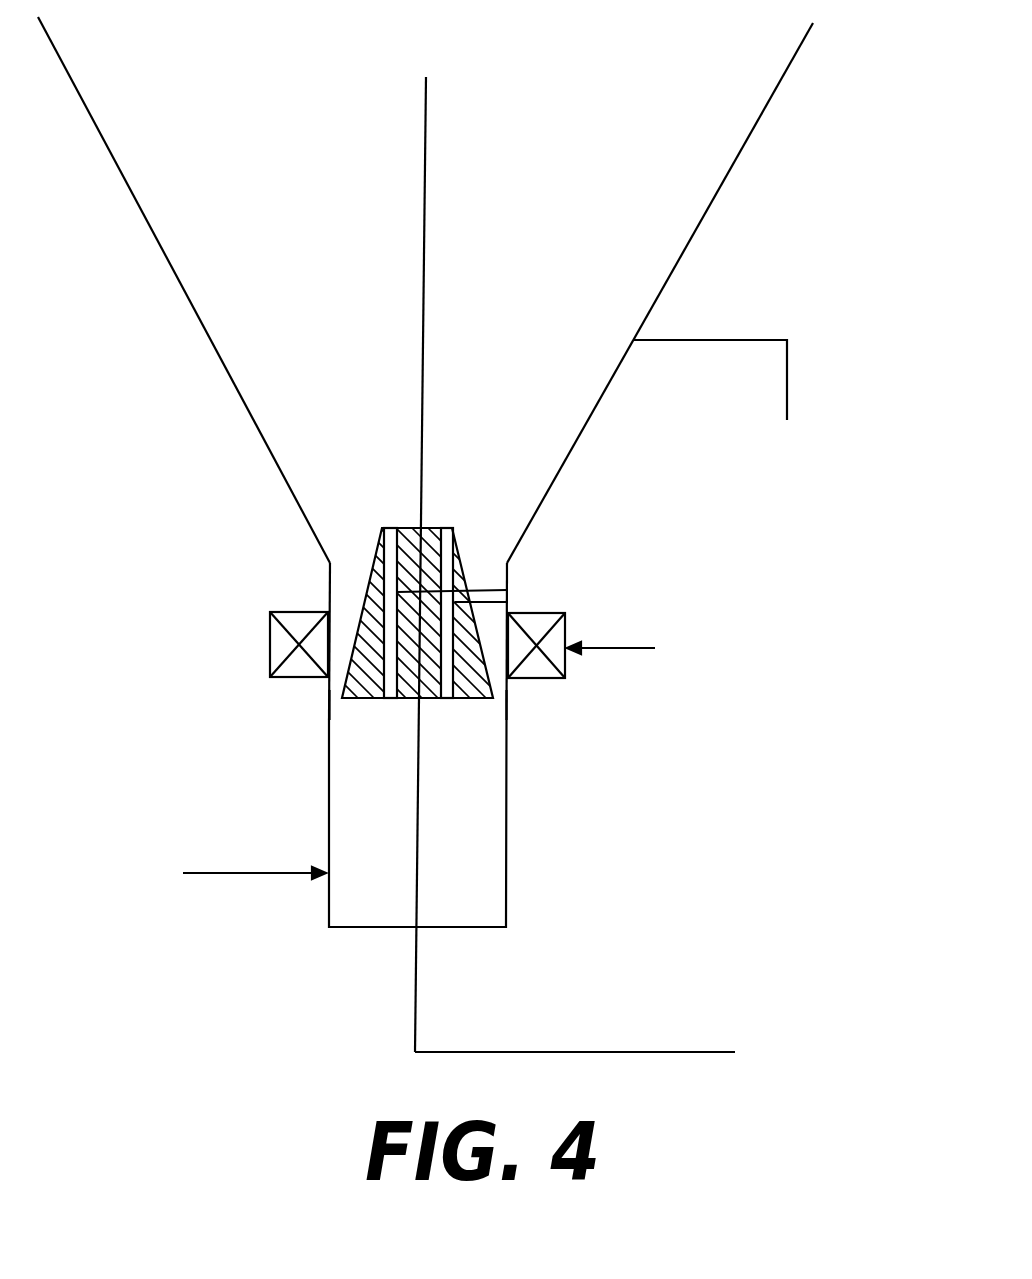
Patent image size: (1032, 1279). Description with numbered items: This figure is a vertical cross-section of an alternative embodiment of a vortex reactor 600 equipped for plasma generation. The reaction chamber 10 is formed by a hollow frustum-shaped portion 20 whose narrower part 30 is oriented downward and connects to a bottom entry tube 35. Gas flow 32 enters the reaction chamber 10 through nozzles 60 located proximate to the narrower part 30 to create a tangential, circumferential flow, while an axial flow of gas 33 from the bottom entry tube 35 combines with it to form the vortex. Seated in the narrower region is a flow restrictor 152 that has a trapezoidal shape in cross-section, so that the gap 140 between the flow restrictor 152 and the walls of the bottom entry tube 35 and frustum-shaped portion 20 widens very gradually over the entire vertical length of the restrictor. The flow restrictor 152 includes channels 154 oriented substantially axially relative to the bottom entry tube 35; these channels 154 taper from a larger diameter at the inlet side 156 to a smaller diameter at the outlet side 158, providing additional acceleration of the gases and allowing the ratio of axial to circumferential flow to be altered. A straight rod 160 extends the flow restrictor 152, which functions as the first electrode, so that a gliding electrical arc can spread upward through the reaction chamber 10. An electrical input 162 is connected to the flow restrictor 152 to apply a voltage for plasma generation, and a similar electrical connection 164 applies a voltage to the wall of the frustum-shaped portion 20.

The reaction chamber 10 is at (425, 472).
The frustum-shaped portion 20 is at (220, 363).
The narrower part 30 is at (330, 565).
The gas flow 32 is at (637, 651).
The axial flow of gas 33 is at (232, 878).
The bottom entry tube 35 is at (507, 880).
The nozzles 60 is at (270, 650).
The gap 140 is at (328, 706).
The flow restrictor 152 is at (462, 560).
The channels 154 is at (512, 590).
The inlet side 156 is at (388, 700).
The outlet side 158 is at (446, 528).
The straight rod 160 is at (427, 148).
The electrical input 162 is at (535, 1050).
The electrical connection 164 is at (790, 378).
The vortex reactor 600 is at (792, 240).